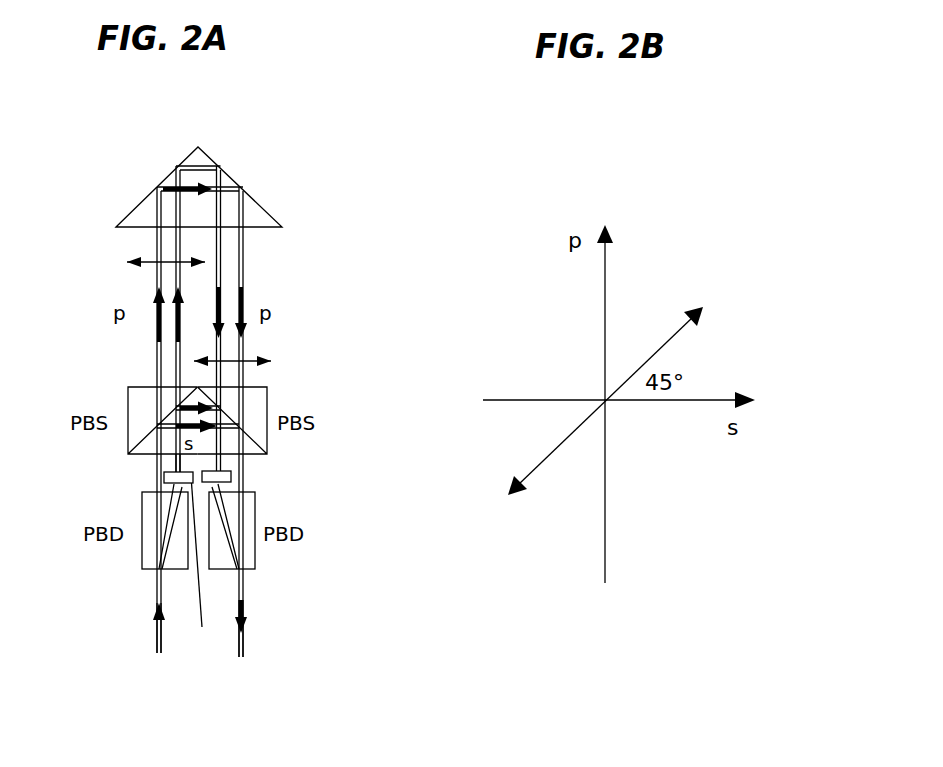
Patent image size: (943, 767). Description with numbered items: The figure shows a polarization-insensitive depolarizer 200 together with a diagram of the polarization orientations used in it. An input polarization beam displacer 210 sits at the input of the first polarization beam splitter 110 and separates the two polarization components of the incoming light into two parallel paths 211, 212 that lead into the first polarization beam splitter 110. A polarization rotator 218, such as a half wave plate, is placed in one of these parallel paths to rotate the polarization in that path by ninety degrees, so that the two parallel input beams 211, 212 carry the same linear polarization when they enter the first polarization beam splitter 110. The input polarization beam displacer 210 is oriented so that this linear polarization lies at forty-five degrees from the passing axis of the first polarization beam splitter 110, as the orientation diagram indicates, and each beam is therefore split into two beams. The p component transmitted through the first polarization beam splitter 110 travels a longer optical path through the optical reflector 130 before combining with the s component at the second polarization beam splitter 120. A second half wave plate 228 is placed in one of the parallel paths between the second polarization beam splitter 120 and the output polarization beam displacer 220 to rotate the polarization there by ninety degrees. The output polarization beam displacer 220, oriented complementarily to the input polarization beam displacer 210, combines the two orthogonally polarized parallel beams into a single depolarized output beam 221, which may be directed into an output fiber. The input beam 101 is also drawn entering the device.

The polarization-insensitive depolarizer 200 is at (84, 177).
The optical reflector 130 is at (260, 210).
The first polarization beam splitter 110 is at (128, 405).
The second polarization beam splitter 120 is at (268, 394).
The parallel path 212 is at (172, 463).
The parallel path 211 is at (153, 475).
The second half wave plate 228 is at (230, 473).
The input polarization beam displacer 210 is at (142, 555).
The output polarization beam displacer 220 is at (255, 549).
The input optical beam 101 is at (152, 637).
The depolarized output beam 221 is at (243, 613).
The polarization rotator 218 is at (201, 571).